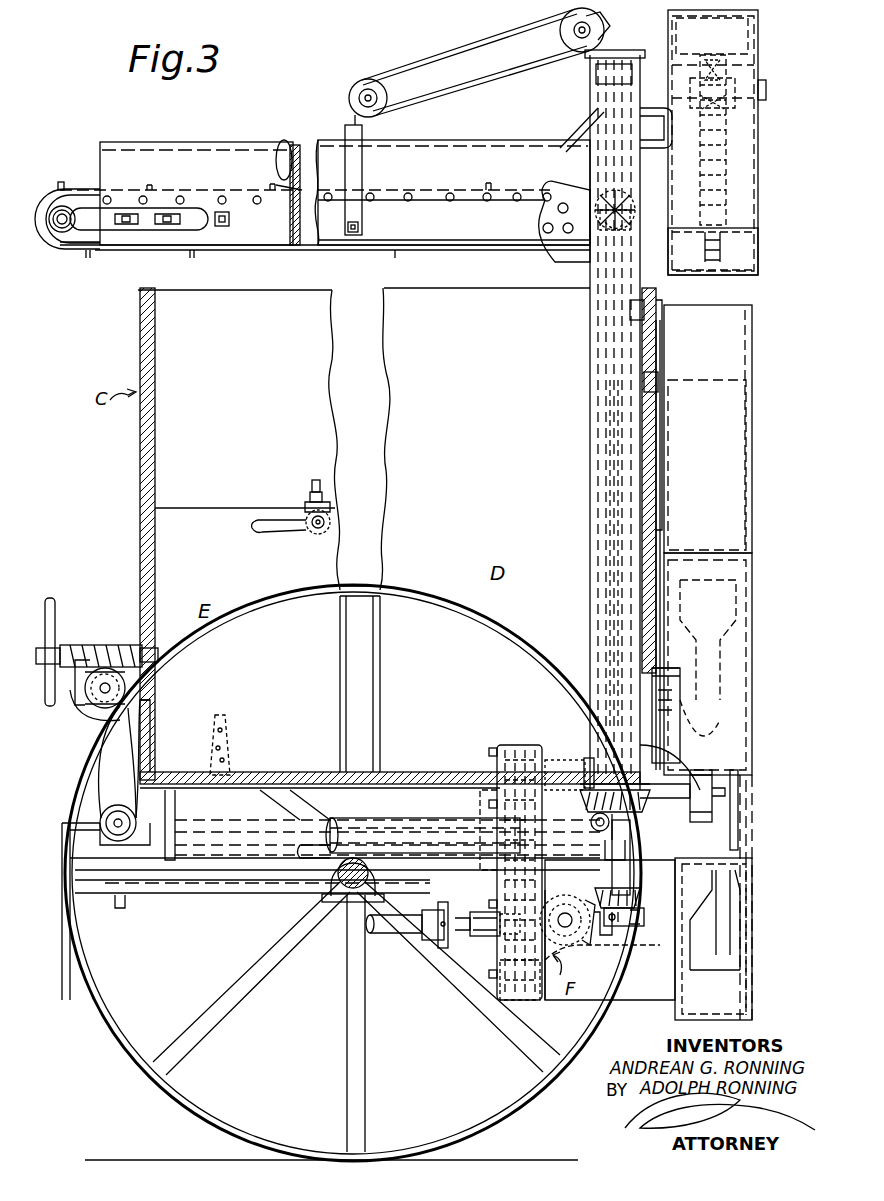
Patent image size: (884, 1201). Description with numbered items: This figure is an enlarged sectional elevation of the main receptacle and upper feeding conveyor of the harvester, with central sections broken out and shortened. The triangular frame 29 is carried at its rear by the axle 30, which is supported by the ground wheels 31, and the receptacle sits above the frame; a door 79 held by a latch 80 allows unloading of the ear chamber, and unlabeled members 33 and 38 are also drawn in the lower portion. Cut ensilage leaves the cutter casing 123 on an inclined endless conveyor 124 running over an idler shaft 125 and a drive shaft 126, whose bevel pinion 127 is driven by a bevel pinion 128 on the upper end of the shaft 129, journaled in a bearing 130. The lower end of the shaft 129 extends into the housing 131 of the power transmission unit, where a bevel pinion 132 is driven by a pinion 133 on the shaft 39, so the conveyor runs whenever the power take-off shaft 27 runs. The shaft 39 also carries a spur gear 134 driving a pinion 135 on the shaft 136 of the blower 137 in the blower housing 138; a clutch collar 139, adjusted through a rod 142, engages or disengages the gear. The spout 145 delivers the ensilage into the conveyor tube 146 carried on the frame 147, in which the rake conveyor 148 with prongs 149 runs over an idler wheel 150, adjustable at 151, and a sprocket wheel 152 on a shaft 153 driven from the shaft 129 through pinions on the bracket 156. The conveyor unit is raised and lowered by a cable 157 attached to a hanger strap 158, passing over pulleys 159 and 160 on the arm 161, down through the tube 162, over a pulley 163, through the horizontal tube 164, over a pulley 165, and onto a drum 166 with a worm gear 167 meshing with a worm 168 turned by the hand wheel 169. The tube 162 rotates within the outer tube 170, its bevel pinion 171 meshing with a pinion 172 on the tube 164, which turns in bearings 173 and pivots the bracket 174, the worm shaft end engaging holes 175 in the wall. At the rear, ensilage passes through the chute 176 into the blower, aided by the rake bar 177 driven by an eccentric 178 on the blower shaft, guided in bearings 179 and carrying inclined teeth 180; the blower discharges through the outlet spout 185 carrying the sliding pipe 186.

The power take-off shaft 27 is at (387, 932).
The triangular frame 29 is at (205, 895).
The axle or shaft 30 is at (350, 895).
The ground wheels 31 is at (185, 1090).
The bottom plate 33 is at (418, 778).
The coupling 38 is at (442, 946).
The shaft 39 is at (475, 936).
The door 79 is at (326, 538).
The latch 80 is at (325, 512).
The casing 123 is at (748, 192).
The endless conveyor 124 is at (725, 245).
The idler shaft 125 is at (565, 155).
The drive shaft 126 is at (766, 92).
The bevel pinion 127 is at (630, 68).
The bevel pinion 128 is at (572, 138).
The shaft 129 is at (618, 868).
The bearing 130 is at (656, 146).
The housing 131 is at (528, 1003).
The bevel pinion 132 is at (640, 895).
The bevel pinion 133 is at (600, 945).
The spur gear 134 is at (520, 985).
The pinion 135 is at (528, 748).
The blower shaft 136 is at (714, 800).
The blower or fan 137 is at (722, 955).
The blower housing 138 is at (752, 835).
The clutch collar 139 is at (640, 918).
The rod 142 is at (380, 830).
The apron or spout 145 is at (660, 78).
The conveyor tube 146 is at (460, 150).
The board or frame 147 is at (378, 215).
The rake acting conveyor 148 is at (300, 150).
The prongs 149 is at (61, 182).
The idler wheel 150 is at (68, 235).
The adjustment 151 is at (210, 228).
The sprocket wheel 152 is at (632, 220).
The shaft 153 is at (628, 232).
The bracket 156 is at (565, 257).
The cable 157 is at (462, 42).
The hanger strap 158 is at (355, 160).
The pulley 159 is at (375, 80).
The pulley 160 is at (600, 22).
The arm 161 is at (472, 78).
The tube 162 is at (592, 315).
The pulley 163 is at (612, 826).
The horizontal tube 164 is at (228, 830).
The pulley 165 is at (116, 838).
The drum 166 is at (118, 690).
The worm gear 167 is at (130, 660).
The worm 168 is at (105, 645).
The hand wheel 169 is at (56, 618).
The outer tube 170 is at (600, 400).
The bevel pinion 171 is at (596, 758).
The bevel pinion 172 is at (562, 775).
The bearings 173 is at (172, 812).
The bracket 174 is at (150, 760).
The holes 175 is at (155, 628).
The chute 176 is at (665, 700).
The rake bar 177 is at (642, 520).
The eccentric 178 is at (712, 782).
The bearings 179 is at (650, 382).
The teeth 180 is at (630, 525).
The outlet spout 185 is at (735, 565).
The pipe or cylinder 186 is at (735, 460).